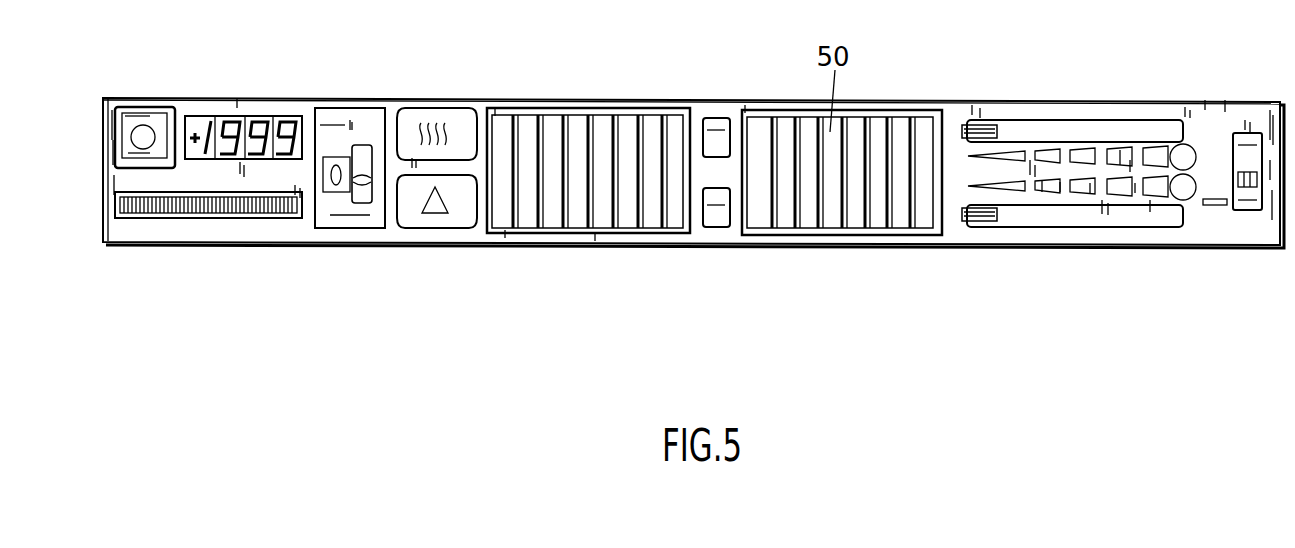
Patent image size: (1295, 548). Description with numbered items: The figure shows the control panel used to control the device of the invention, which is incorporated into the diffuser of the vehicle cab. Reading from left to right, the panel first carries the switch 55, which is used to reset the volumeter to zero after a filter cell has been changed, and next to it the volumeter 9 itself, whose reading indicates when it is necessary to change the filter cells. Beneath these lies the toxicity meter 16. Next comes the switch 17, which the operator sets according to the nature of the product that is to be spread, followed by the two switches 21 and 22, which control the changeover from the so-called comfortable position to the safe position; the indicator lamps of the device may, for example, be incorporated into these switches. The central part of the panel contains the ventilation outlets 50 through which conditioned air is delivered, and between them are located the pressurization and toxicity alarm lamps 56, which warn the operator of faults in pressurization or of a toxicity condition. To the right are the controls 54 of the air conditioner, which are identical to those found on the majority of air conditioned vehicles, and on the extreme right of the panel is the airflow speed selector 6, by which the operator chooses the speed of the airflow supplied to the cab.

The switch 55 is at (147, 122).
The volumeter 9 is at (238, 118).
The toxicity meter 16 is at (210, 207).
The switch 17 is at (358, 197).
The switch 21 is at (430, 112).
The switch 22 is at (434, 220).
The ventilation outlets 50 is at (577, 135).
The pressurization and toxicity alarm lamps 56 is at (717, 130).
The controls of the air conditioner 54 is at (1073, 132).
The airflow speed selector 6 is at (1245, 187).